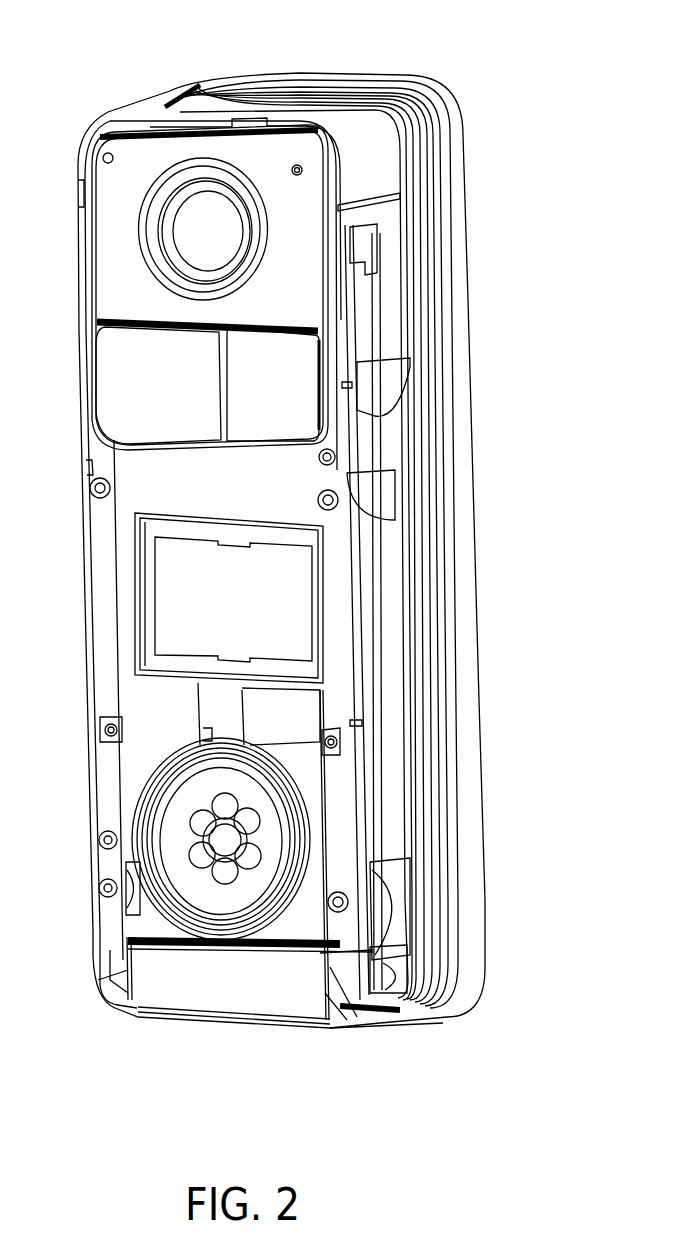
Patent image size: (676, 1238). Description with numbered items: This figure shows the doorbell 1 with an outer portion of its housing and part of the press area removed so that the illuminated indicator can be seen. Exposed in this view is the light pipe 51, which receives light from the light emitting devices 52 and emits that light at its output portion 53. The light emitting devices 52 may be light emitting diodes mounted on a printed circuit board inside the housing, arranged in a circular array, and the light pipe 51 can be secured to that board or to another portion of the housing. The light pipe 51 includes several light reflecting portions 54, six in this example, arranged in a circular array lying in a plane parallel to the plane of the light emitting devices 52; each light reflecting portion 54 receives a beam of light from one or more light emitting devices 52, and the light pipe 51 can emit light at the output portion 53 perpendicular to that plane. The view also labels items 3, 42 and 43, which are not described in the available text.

The doorbell 1 is at (101, 70).
The housing 3 is at (470, 632).
The camera 42 is at (195, 243).
The sensor window 43 is at (147, 402).
The light pipe 51 is at (188, 883).
The light emitting devices 52 is at (240, 845).
The output portion 53 is at (145, 767).
The light reflecting portions 54 is at (200, 853).